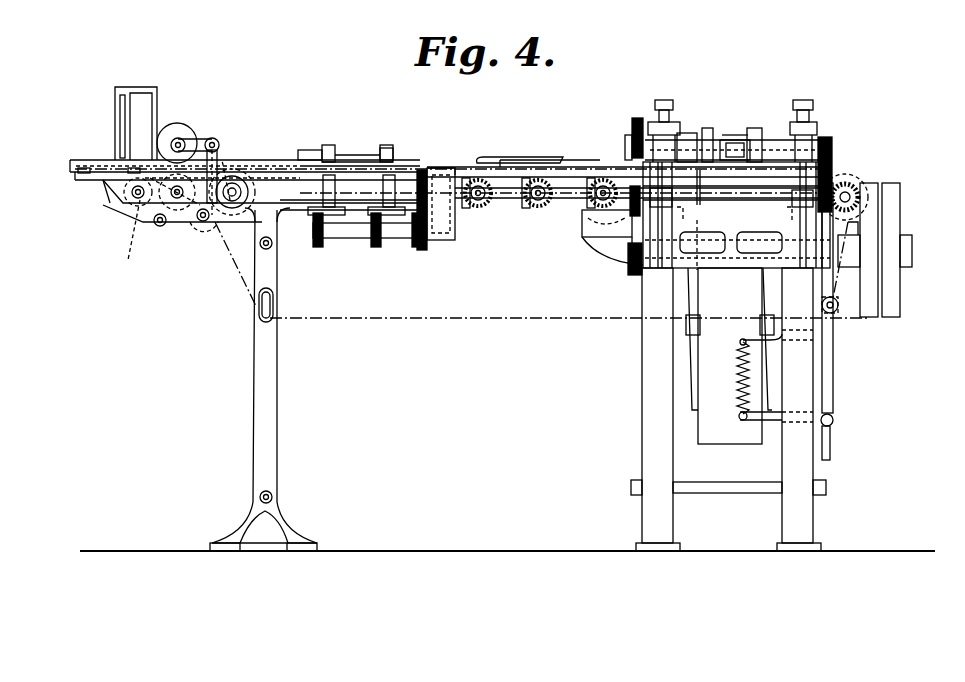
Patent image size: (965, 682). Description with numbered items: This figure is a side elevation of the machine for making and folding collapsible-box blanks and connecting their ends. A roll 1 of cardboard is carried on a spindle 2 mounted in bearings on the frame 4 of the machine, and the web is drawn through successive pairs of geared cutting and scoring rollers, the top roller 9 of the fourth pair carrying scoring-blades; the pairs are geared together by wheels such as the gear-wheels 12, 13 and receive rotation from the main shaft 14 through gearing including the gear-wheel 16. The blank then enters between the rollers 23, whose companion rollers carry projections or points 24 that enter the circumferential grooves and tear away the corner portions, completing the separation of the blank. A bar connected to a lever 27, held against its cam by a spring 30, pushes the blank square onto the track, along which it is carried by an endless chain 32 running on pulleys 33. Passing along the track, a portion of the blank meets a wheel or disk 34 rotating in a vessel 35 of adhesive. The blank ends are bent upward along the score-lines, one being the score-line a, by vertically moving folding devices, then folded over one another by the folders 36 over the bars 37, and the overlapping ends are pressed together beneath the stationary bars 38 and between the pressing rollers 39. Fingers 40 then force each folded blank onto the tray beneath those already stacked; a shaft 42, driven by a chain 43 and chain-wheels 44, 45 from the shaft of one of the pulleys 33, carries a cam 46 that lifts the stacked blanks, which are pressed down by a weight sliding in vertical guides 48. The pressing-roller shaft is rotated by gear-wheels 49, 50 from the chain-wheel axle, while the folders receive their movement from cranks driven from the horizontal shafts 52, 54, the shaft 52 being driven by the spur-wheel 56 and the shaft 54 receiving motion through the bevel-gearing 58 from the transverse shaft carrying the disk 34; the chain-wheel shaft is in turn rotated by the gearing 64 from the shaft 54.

The roll of cardboard 1 is at (730, 356).
The spindle 2 is at (690, 330).
The frame 4 is at (272, 405).
The top roller of fourth pair of rollers 9 is at (690, 140).
The gear-wheel 12 is at (634, 118).
The gear-wheel 13 is at (635, 186).
The main shaft 14 is at (845, 252).
The gear-wheel 16 is at (630, 275).
The top roller 23 is at (707, 130).
The projections or points 24 is at (735, 142).
The score-line a is at (745, 134).
The lever 27 is at (836, 388).
The spring 30 is at (737, 378).
The endless chain 32 is at (447, 165).
The pulley 33 is at (260, 312).
The wheel or disk 34 is at (590, 180).
The vessel 35 is at (600, 238).
The folding devices 36 is at (356, 158).
The bars 37 is at (470, 166).
The stationary rods or bars 38 is at (290, 156).
The roller 39 is at (180, 137).
The fingers 40 is at (160, 226).
The shaft 42 is at (137, 200).
The chain 43 is at (165, 170).
The chain-wheel 44 is at (261, 201).
The chain-wheel 45 is at (130, 208).
The cam 46 is at (126, 236).
The vertical guides 48 is at (117, 128).
The gear-wheel 49 is at (177, 200).
The gear-wheel 50 is at (203, 232).
The horizontal shaft 52 is at (350, 235).
The horizontal shaft 54 is at (502, 200).
The spur-wheel 56 is at (422, 170).
The bevel-gearing 58 is at (585, 200).
The gearing 64 is at (860, 190).